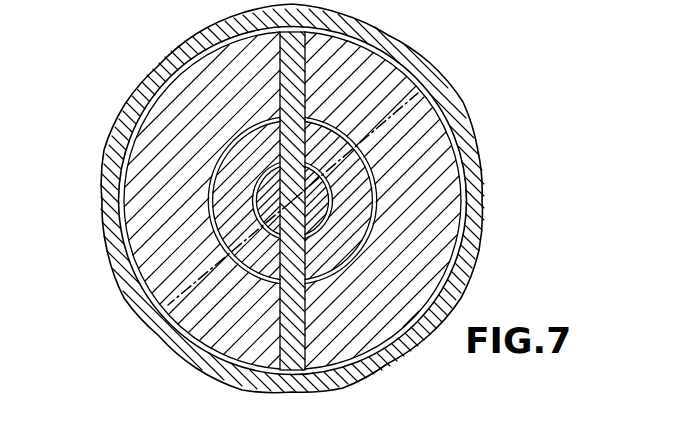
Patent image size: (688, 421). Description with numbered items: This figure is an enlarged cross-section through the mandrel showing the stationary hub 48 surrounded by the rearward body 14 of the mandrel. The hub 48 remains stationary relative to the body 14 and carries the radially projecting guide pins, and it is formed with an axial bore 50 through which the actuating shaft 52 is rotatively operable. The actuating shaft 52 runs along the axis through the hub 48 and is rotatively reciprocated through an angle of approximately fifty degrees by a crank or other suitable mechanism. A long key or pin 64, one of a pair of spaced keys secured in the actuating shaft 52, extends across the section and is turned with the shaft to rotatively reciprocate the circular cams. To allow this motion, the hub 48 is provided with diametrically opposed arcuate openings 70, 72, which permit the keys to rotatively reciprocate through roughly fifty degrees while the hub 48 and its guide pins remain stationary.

The body means 14 is at (207, 33).
The long key or pin 64 is at (295, 50).
The arcuate opening 70 is at (325, 138).
The actuating shaft 52 is at (313, 197).
The central hub 48 is at (352, 228).
The axial bore 50 is at (257, 200).
The arcuate opening 72 is at (260, 262).